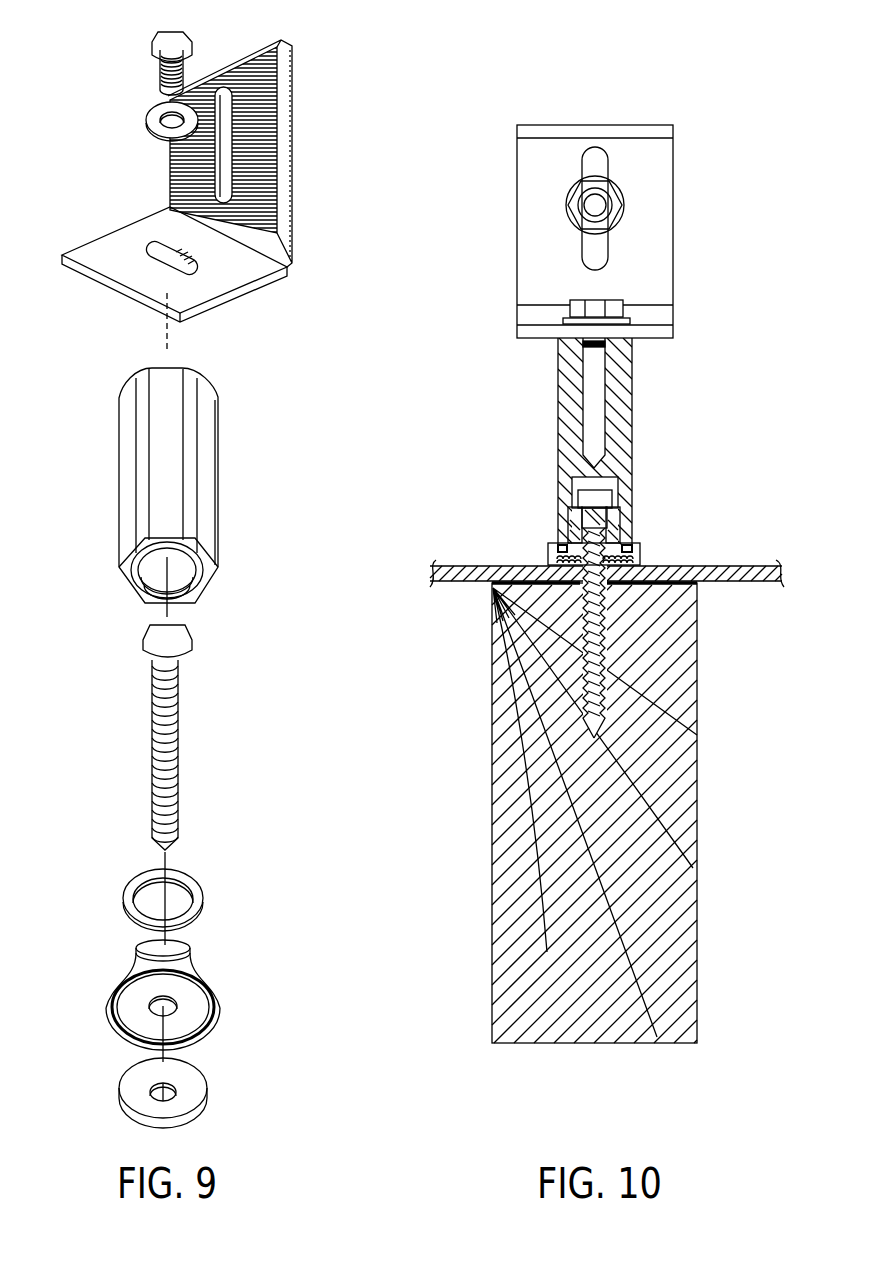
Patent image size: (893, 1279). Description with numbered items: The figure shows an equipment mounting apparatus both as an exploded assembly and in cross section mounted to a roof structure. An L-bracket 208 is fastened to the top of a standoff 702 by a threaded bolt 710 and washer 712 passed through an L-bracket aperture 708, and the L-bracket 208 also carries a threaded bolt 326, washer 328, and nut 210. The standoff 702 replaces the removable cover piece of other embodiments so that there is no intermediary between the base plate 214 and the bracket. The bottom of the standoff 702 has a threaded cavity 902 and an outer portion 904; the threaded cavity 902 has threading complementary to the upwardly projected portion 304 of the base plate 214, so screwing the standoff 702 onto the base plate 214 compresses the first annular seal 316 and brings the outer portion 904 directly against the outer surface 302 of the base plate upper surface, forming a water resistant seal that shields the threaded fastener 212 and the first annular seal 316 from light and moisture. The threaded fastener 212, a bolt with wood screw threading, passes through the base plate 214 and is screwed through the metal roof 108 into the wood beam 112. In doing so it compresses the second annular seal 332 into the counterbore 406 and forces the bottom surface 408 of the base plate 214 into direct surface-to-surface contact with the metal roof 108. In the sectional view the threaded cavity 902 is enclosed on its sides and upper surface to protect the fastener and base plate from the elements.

In FIG. 10, the metal roof 108 is at (700, 587).
In FIG. 10, the wood beam 112 is at (697, 787).
In FIG. 9, the L-bracket 208 is at (221, 196).
In FIG. 10, the L-bracket 208 is at (612, 206).
In FIG. 10, the nut 210 is at (613, 202).
In FIG. 9, the threaded fastener 212 is at (182, 742).
In FIG. 10, the threaded fastener 212 is at (600, 685).
In FIG. 9, the base plate 214 is at (176, 991).
In FIG. 10, the base plate 214 is at (606, 527).
In FIG. 9, the outer surface 302 is at (210, 972).
In FIG. 9, the upwardly projected portion 304 is at (135, 953).
In FIG. 9, the first annular seal 316 is at (200, 885).
In FIG. 10, the first annular seal 316 is at (633, 544).
In FIG. 10, the threaded bolt 326 is at (597, 195).
In FIG. 10, the washer 328 is at (567, 215).
In FIG. 9, the second annular seal 332 is at (205, 1083).
In FIG. 10, the second annular seal 332 is at (592, 586).
In FIG. 9, the counterbore 406 is at (132, 1012).
In FIG. 10, the counterbore 406 is at (636, 545).
In FIG. 9, the bottom surface 408 is at (200, 1037).
In FIG. 10, the bottom surface 408 is at (570, 567).
In FIG. 9, the standoff 702 is at (220, 512).
In FIG. 10, the standoff 702 is at (647, 441).
In FIG. 9, the L-bracket aperture 708 is at (147, 244).
In FIG. 9, the threaded bolt 710 is at (153, 48).
In FIG. 9, the washer 712 is at (148, 118).
In FIG. 9, the threaded cavity 902 is at (178, 573).
In FIG. 10, the threaded cavity 902 is at (618, 483).
In FIG. 9, the outer portion 904 is at (210, 570).